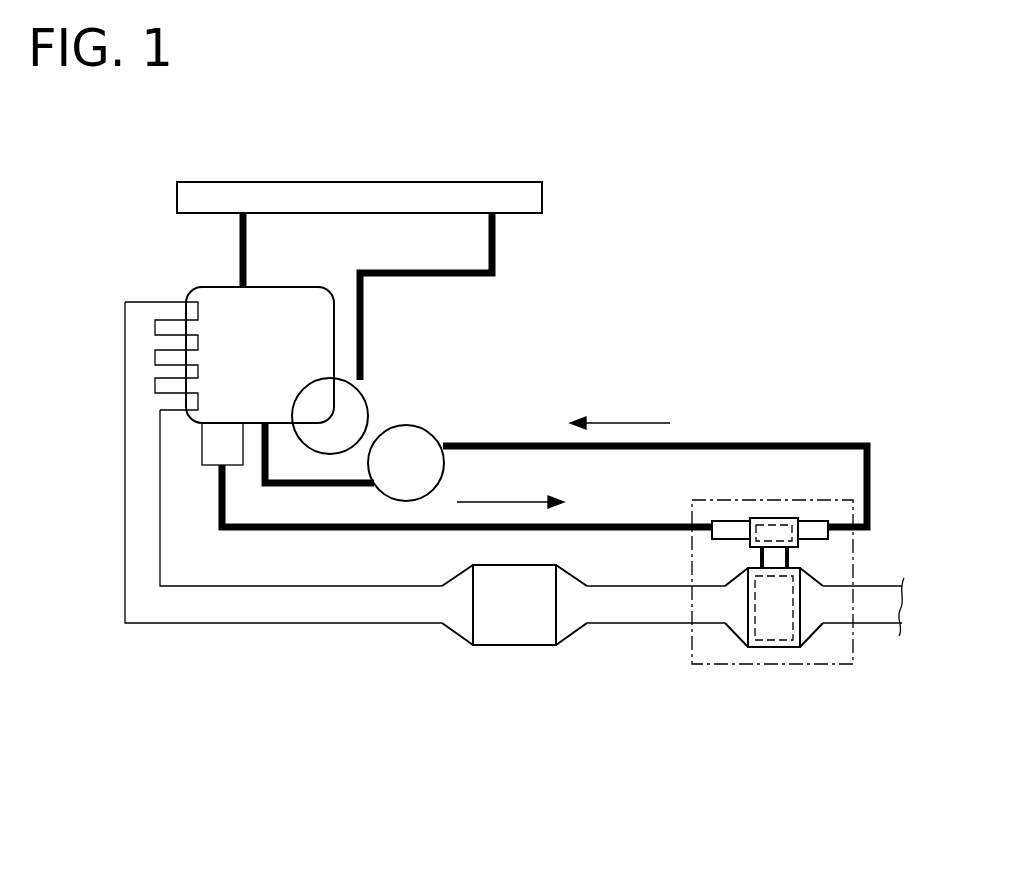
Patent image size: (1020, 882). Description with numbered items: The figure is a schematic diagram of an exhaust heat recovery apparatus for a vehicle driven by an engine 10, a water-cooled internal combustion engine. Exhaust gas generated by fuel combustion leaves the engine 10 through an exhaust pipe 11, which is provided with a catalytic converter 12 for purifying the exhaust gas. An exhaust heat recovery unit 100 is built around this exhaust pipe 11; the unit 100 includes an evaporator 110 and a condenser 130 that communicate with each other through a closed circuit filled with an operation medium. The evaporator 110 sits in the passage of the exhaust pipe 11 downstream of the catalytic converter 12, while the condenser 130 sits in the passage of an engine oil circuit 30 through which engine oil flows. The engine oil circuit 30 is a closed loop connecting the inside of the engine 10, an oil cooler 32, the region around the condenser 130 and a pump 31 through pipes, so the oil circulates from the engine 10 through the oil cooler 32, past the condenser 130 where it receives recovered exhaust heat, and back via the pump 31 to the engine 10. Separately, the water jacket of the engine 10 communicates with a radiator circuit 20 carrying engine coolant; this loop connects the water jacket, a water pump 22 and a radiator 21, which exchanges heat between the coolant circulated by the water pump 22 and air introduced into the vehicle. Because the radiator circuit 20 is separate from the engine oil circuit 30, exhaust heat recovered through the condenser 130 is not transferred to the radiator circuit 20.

The engine 10 is at (298, 287).
The exhaust pipe 11 is at (228, 625).
The catalytic converter 12 is at (534, 645).
The radiator circuit 20 is at (496, 247).
The radiator 21 is at (467, 182).
The water pump 22 is at (363, 402).
The engine oil circuit 30 is at (760, 446).
The pump 31 is at (415, 427).
The oil cooler 32 is at (202, 445).
The exhaust heat recovery unit 100 is at (740, 665).
The evaporator 110 is at (785, 642).
The condenser 130 is at (780, 520).